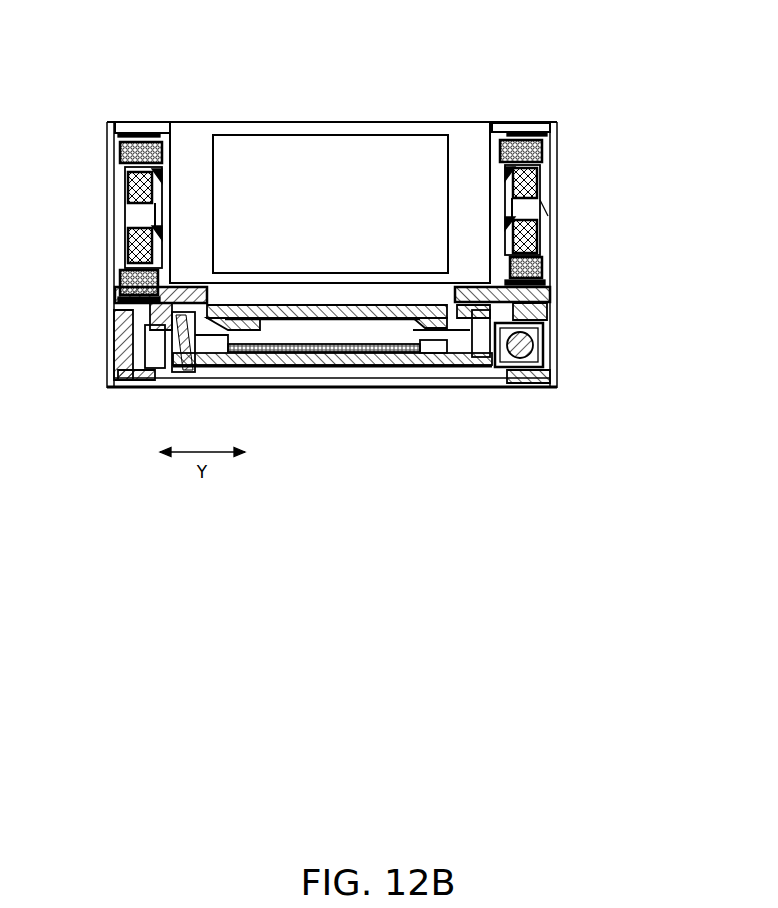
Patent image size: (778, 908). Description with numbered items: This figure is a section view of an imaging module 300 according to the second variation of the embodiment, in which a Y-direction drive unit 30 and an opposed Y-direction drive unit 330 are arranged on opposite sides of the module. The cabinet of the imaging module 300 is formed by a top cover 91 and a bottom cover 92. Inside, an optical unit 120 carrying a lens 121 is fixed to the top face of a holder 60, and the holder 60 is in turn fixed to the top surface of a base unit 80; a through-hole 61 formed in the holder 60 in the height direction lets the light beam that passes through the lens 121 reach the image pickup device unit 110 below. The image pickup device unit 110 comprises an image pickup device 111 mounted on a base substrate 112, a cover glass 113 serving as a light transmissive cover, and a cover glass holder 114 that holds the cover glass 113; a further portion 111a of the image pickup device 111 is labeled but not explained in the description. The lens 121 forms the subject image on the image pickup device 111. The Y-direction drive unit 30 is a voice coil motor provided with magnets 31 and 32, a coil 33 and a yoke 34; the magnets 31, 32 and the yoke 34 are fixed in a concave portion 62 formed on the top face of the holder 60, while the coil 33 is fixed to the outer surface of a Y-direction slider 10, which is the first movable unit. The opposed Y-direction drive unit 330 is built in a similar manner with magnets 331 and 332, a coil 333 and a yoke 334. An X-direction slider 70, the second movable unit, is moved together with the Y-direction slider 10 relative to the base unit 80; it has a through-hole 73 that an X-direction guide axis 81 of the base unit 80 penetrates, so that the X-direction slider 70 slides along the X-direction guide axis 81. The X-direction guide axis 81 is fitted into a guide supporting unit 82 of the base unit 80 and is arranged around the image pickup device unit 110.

The imaging module 300 is at (97, 88).
The bottom cover 92 is at (108, 127).
The top cover 91 is at (157, 122).
The optical unit 120 is at (457, 122).
The lens 121 is at (395, 135).
The Y-direction drive unit 30 is at (52, 132).
The magnet 31 is at (120, 150).
The magnet 32 is at (125, 280).
The coil 33 is at (135, 240).
The yoke 34 is at (125, 190).
The concave portion 62 is at (120, 290).
The X-direction slider 70 is at (147, 350).
The base unit 80 is at (113, 365).
The image pickup device unit 110 is at (283, 380).
The cover glass holder 114 is at (181, 370).
The base substrate 112 is at (237, 364).
The image pickup device 111 is at (336, 362).
The image sensor 111a is at (376, 344).
The cover glass 113 is at (400, 362).
The through-hole 61 is at (449, 292).
The holder 60 is at (552, 293).
The through-hole 73 is at (521, 350).
The X-direction guide axis 81 is at (549, 388).
The guide supporting unit 82 is at (549, 365).
The Y-direction slider 10 is at (548, 216).
The Y-direction drive unit 330 is at (652, 143).
The magnet 331 is at (552, 143).
The magnet 332 is at (552, 257).
The coil 333 is at (552, 172).
The yoke 334 is at (552, 218).